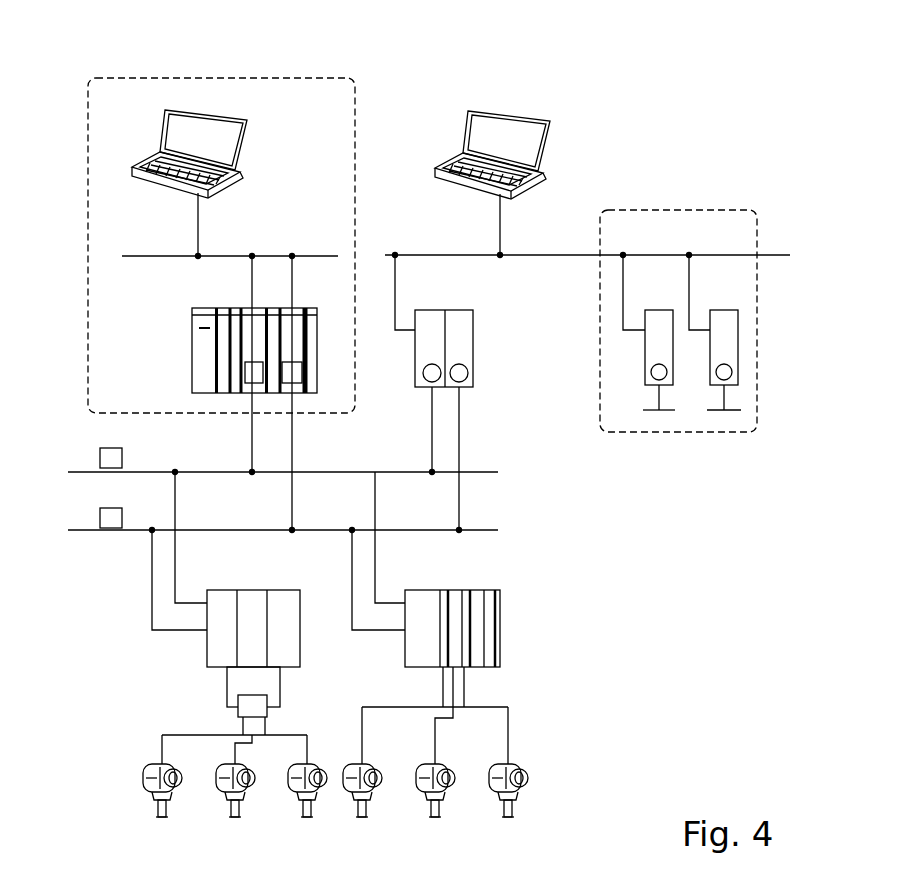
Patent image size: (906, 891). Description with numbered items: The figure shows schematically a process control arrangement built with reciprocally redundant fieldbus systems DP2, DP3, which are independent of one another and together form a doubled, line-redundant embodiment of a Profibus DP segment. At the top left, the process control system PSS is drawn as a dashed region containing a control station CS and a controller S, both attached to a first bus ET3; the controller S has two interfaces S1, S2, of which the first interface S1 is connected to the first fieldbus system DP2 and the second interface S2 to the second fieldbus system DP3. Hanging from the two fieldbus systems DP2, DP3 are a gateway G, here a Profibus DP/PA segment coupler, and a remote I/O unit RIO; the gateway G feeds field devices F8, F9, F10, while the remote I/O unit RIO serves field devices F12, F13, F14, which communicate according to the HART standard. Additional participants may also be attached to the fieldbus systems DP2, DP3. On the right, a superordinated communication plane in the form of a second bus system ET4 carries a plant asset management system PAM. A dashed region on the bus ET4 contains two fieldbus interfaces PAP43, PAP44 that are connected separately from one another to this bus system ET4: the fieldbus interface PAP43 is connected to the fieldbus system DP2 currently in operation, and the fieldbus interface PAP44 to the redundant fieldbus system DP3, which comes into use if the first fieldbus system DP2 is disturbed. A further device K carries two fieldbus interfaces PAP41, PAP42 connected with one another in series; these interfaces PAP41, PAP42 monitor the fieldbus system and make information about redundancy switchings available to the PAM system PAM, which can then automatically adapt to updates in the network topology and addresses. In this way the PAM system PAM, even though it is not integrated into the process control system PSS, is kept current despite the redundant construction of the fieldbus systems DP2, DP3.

The process control system PSS is at (248, 78).
The engineering/control station CS is at (234, 143).
The Ethernet network 3 ET3 is at (267, 256).
The second bus system ET4 is at (775, 255).
The PAM system PAM is at (537, 144).
The controller S is at (185, 335).
The controller interface 1 S1 is at (250, 394).
The controller interface 2 S2 is at (292, 323).
The fieldbus system DP2 is at (90, 472).
The fieldbus system DP3 is at (90, 530).
The coupler K is at (483, 347).
The fieldbus interface PAP41 is at (430, 325).
The fieldbus interface PAP42 is at (468, 335).
The fieldbus interface PAP43 is at (648, 355).
The fieldbus interface PAP44 is at (735, 355).
The gateway G is at (197, 647).
The remote I/O unit RIO is at (493, 630).
The field device 8 F8 is at (152, 797).
The field device 9 F9 is at (225, 797).
The field device 10 F10 is at (297, 797).
The field device F12 is at (352, 797).
The field device F13 is at (425, 797).
The field device F14 is at (498, 797).